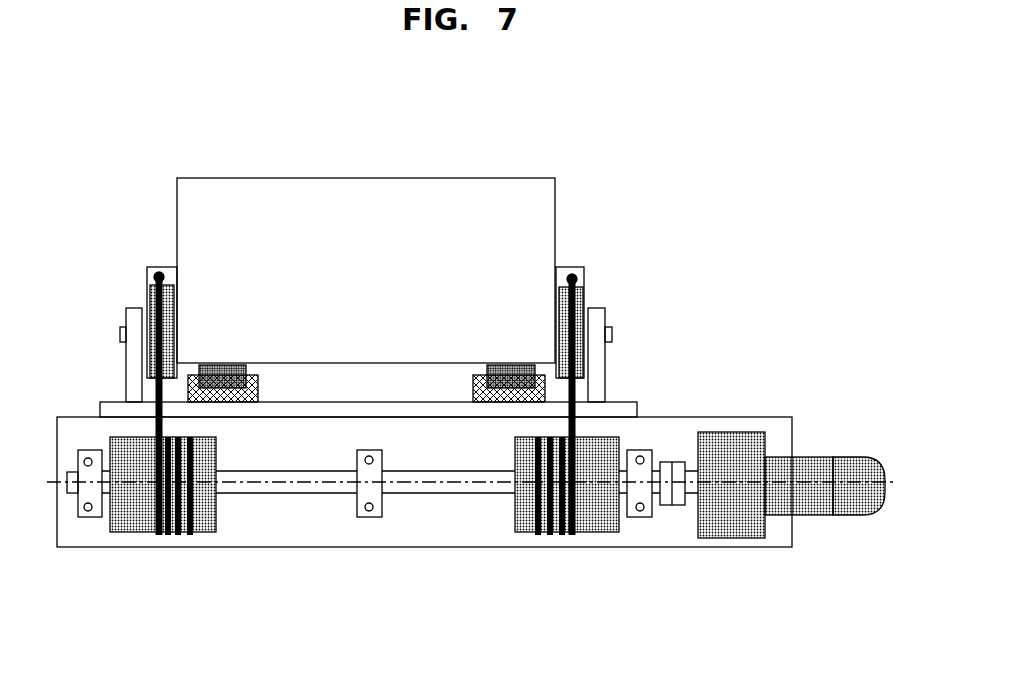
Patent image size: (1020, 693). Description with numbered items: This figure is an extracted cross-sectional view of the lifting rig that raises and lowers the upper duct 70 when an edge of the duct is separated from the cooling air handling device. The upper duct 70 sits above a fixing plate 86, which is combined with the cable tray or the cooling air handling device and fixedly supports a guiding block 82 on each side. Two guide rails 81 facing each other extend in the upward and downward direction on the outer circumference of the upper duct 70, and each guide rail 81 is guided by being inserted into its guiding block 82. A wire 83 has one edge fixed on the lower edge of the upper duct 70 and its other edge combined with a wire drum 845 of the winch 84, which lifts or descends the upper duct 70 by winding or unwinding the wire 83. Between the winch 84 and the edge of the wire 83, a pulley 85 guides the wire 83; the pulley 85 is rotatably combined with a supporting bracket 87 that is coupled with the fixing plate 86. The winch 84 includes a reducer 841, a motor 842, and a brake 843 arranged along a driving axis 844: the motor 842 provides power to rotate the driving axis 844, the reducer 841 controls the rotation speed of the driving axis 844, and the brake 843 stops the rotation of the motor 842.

The upper duct 70 is at (300, 178).
The guide rail 81 is at (223, 365).
The guiding block 82 is at (188, 388).
The wire 83 is at (158, 432).
The winch 84 is at (694, 556).
The pulley 85 is at (152, 288).
The fixing plate 86 is at (105, 408).
The supporting bracket 87 is at (132, 318).
The reducer 841 is at (740, 528).
The motor 842 is at (803, 503).
The brake 843 is at (863, 506).
The driving axis 844 is at (286, 495).
The wire drum 845 is at (132, 527).